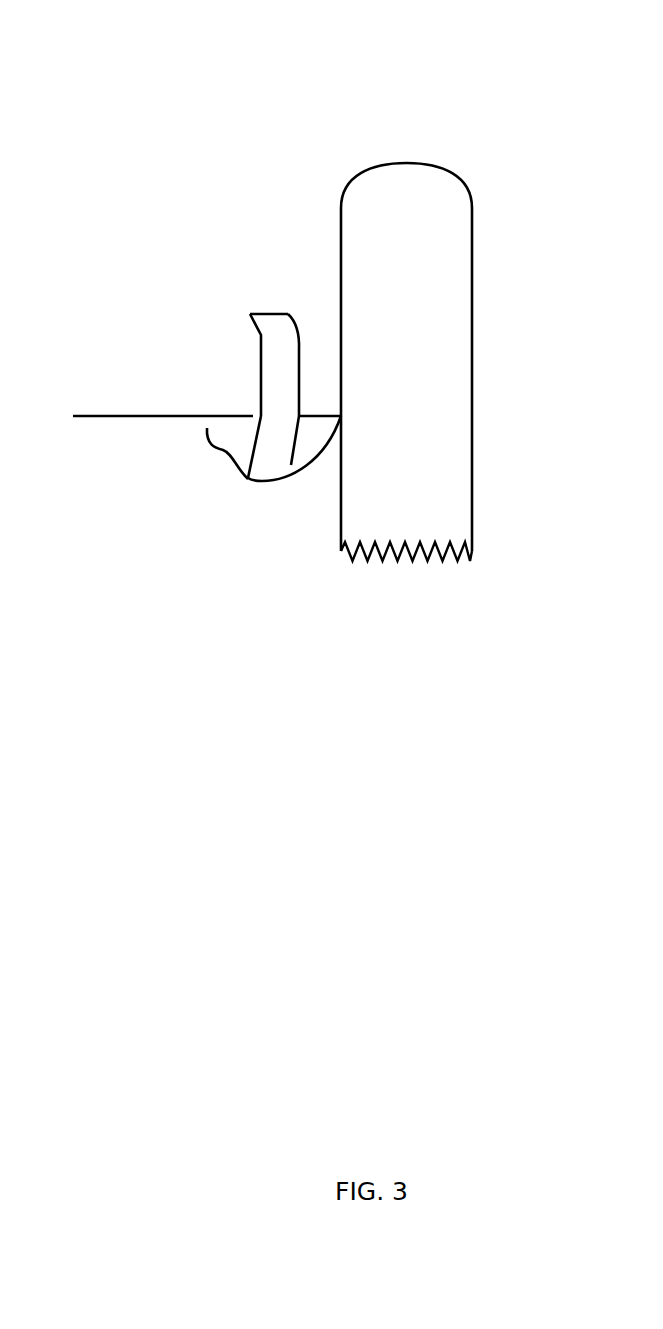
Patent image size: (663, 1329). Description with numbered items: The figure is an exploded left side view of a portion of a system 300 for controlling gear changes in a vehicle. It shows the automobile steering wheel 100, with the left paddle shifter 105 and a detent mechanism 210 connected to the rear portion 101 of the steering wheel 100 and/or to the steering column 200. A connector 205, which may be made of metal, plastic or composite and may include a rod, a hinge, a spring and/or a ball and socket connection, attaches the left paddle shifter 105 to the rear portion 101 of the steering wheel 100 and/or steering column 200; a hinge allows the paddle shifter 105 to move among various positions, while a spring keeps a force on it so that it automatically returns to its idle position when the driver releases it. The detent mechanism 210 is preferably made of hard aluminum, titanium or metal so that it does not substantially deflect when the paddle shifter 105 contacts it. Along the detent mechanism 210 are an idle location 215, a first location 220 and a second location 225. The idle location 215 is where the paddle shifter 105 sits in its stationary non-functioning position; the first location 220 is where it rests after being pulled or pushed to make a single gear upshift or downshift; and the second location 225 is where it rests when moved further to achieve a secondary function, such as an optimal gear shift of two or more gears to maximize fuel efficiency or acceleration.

The system 300 is at (118, 50).
The automobile steering wheel 100 is at (467, 195).
The rear portion 101 is at (340, 203).
The left paddle shifter 105 is at (258, 333).
The steering column 200 is at (93, 415).
The connector 205 is at (323, 416).
The detent mechanism 210 is at (303, 470).
The idle location 215 is at (258, 500).
The first location 220 is at (222, 471).
The second location 225 is at (196, 443).